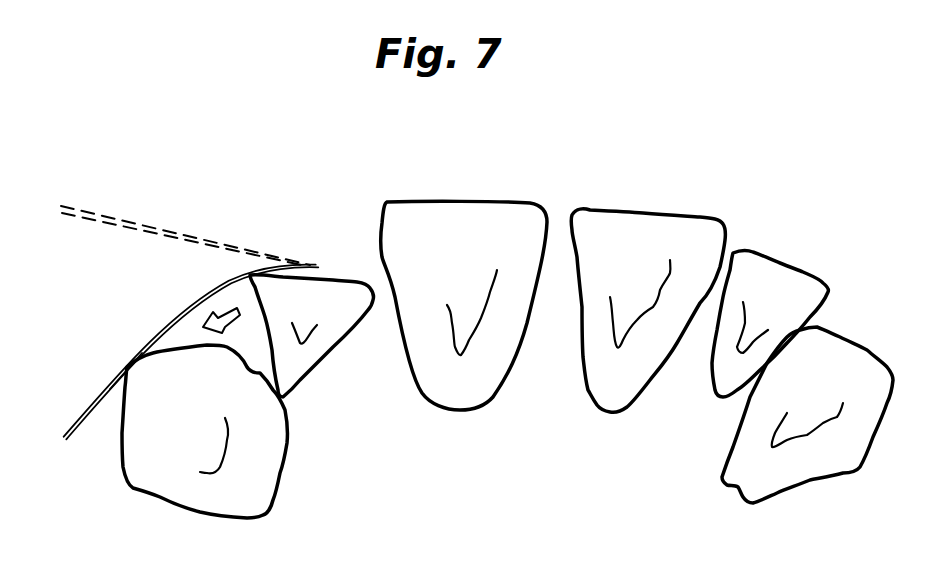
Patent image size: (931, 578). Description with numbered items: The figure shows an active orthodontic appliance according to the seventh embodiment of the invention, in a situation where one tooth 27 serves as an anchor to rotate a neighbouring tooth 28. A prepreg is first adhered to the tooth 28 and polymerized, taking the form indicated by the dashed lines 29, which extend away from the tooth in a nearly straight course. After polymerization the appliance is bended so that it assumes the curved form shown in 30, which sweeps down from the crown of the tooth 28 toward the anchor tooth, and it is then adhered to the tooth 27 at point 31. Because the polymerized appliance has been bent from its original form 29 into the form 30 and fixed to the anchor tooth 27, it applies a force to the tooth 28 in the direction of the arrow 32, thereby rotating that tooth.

The tooth 27 is at (155, 473).
The tooth 28 is at (333, 297).
The dashed lines 29 is at (132, 222).
The bended form of the appliance 30 is at (82, 432).
The point 31 is at (127, 363).
The arrow 32 is at (227, 307).